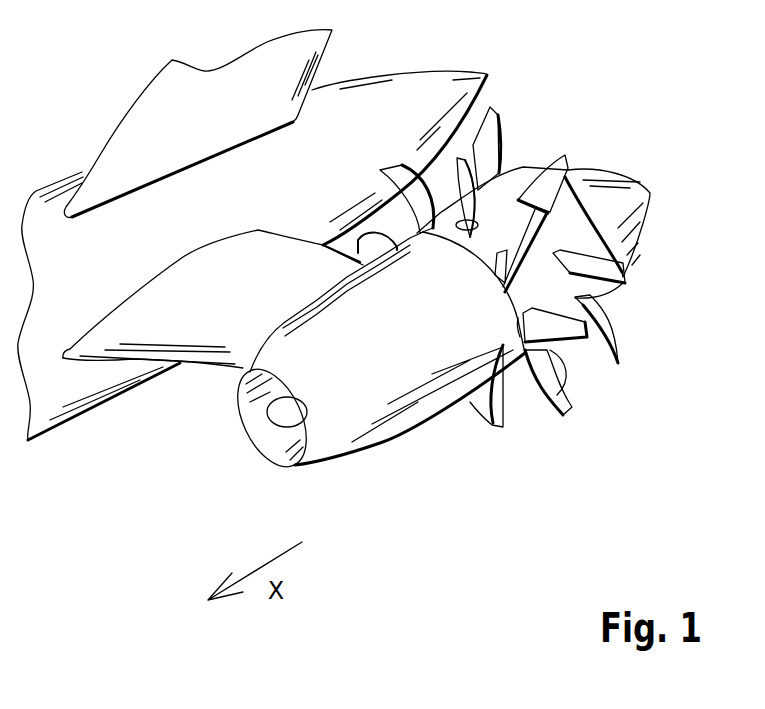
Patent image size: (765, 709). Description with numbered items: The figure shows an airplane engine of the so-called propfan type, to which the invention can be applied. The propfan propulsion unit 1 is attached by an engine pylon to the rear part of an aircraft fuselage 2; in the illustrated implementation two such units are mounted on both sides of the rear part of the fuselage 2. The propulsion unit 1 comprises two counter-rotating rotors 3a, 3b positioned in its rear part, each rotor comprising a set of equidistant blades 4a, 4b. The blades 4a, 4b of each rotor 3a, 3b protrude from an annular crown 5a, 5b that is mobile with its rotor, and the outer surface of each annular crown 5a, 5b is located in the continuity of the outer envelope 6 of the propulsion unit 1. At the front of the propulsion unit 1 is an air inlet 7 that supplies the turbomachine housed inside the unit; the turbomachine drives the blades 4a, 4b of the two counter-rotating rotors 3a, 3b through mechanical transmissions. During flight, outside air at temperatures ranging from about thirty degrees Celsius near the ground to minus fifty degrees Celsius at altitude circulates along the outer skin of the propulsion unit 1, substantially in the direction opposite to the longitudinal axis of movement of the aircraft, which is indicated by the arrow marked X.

The propulsion unit 1 is at (474, 316).
The aircraft fuselage 2 is at (62, 387).
The counter-rotating rotor 3a is at (565, 432).
The counter-rotating rotor 3b is at (622, 294).
The blades 4a is at (560, 408).
The blades 4b is at (610, 328).
The annular crown 5a is at (518, 344).
The annular crown 5b is at (530, 173).
The outer envelope 6 is at (363, 417).
The air inlet 7 is at (280, 447).